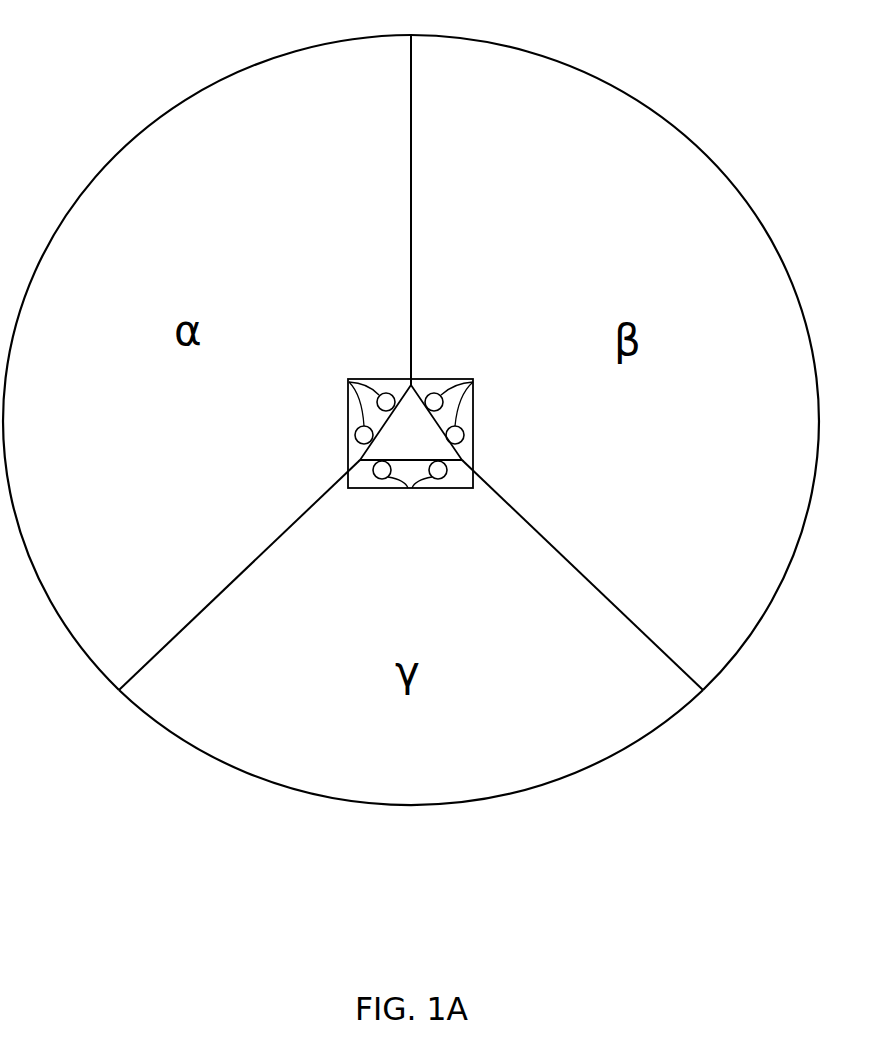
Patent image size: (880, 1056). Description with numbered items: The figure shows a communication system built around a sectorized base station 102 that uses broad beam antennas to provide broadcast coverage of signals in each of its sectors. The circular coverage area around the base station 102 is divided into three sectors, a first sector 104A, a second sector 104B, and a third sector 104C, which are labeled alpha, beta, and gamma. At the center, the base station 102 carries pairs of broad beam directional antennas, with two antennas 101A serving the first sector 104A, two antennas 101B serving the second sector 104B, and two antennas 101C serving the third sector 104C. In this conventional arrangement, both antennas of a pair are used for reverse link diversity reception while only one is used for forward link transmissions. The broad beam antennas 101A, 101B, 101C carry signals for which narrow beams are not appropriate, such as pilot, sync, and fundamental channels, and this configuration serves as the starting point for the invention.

The broad beam directional antennas 101A is at (349, 382).
The broad beam directional antennas 101B is at (473, 382).
The broad beam directional antennas 101C is at (412, 488).
The sectorized base station 102 is at (417, 378).
The sector 104A is at (208, 85).
The sector 104B is at (602, 80).
The sector 104C is at (405, 809).